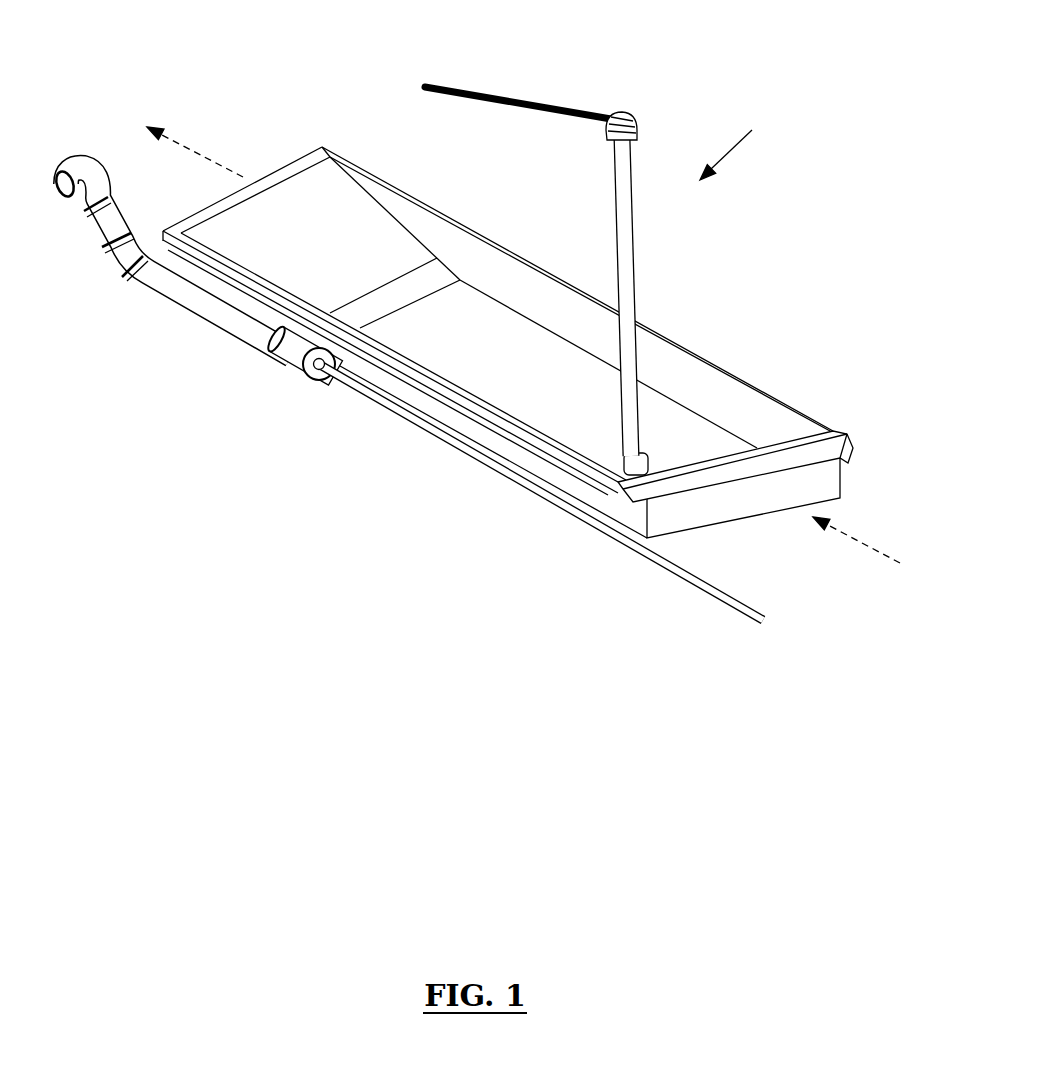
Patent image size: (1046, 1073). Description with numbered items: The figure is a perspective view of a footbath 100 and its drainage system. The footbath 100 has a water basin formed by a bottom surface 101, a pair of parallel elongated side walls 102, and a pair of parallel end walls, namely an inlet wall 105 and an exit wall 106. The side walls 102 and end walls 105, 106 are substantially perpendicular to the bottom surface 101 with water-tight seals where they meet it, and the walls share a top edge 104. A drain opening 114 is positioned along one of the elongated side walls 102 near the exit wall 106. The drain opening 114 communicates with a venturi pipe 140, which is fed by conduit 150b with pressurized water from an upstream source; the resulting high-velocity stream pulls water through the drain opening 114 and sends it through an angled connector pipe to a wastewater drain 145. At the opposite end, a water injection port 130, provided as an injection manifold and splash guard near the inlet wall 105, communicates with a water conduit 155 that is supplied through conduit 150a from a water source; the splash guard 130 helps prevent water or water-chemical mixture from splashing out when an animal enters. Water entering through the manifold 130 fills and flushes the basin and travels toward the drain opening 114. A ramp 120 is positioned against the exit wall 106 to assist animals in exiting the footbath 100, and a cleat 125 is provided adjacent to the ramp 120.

The footbath 100 is at (746, 135).
The bottom surface 101 is at (506, 335).
The elongated side walls 102 is at (712, 405).
The top edge 104 is at (757, 403).
The inlet wall 105 is at (775, 486).
The exit wall 106 is at (257, 177).
The drain opening 114 is at (333, 365).
The ramp 120 is at (338, 252).
The cleat 125 is at (400, 292).
The water injection port 130 is at (780, 450).
The venturi pipe 140 is at (291, 365).
The wastewater drain 145 is at (58, 196).
The conduit 150a is at (490, 93).
The conduit 150b is at (733, 608).
The water conduit 155 is at (630, 232).